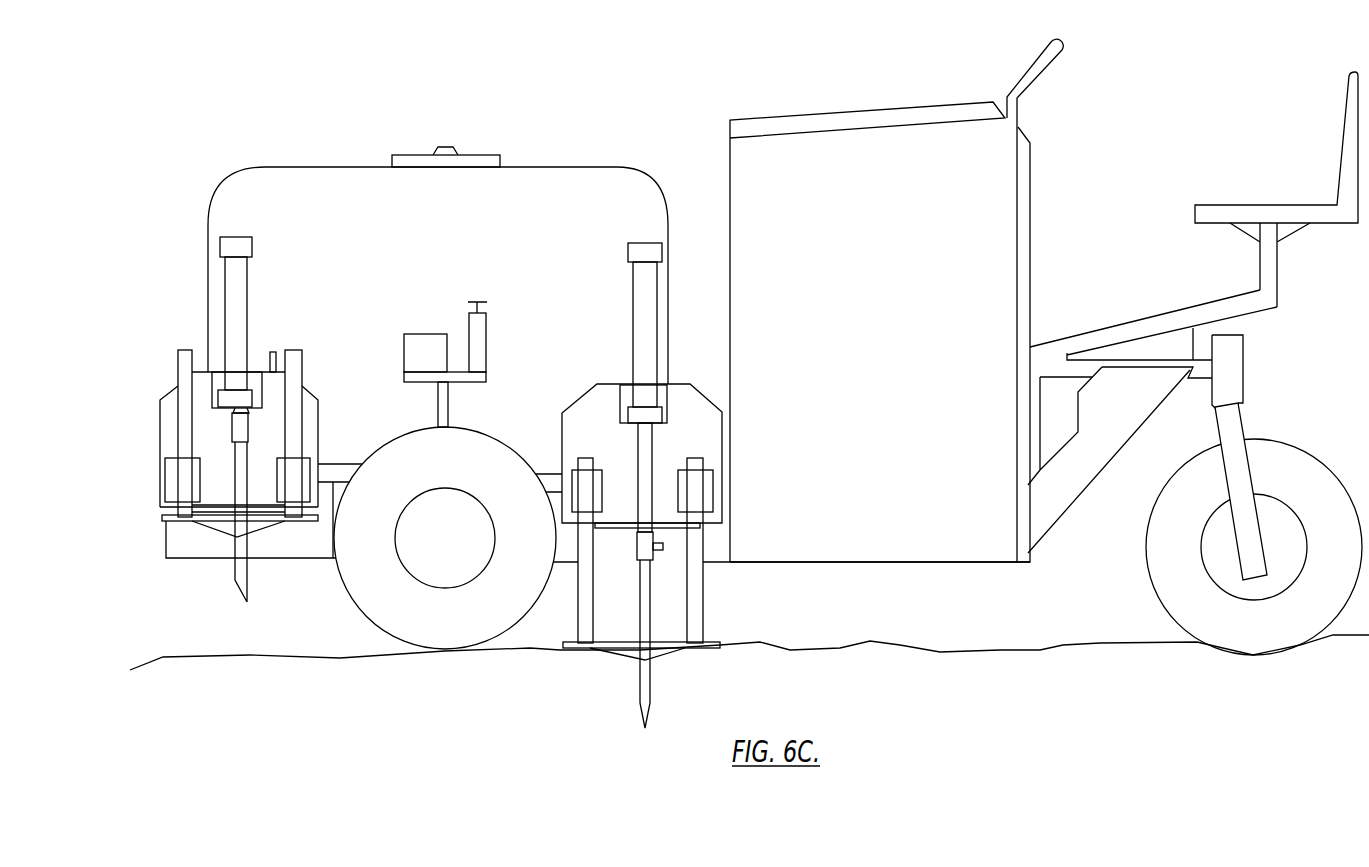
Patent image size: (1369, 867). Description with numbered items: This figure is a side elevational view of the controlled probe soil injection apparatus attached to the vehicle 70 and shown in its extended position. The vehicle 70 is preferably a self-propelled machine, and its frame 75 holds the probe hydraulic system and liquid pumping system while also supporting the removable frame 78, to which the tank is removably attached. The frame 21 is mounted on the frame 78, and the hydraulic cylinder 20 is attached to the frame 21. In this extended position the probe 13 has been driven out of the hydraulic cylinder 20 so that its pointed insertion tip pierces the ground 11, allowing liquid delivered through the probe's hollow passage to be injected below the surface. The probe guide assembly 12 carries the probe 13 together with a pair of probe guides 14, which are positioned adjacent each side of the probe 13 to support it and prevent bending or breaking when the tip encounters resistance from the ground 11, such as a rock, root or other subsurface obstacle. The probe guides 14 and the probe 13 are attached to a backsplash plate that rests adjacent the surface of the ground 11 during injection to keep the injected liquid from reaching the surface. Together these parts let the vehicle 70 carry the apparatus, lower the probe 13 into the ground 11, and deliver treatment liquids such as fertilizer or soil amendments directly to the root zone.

The ground 11 is at (857, 663).
The probe guide assembly 12 is at (568, 614).
The probe 13 is at (235, 497).
The probe guides 14 is at (183, 432).
The hydraulic cylinder 20 is at (224, 315).
The frame 21 is at (165, 402).
The vehicle 70 is at (573, 167).
The frame 75 is at (340, 503).
The frame 78 is at (335, 467).